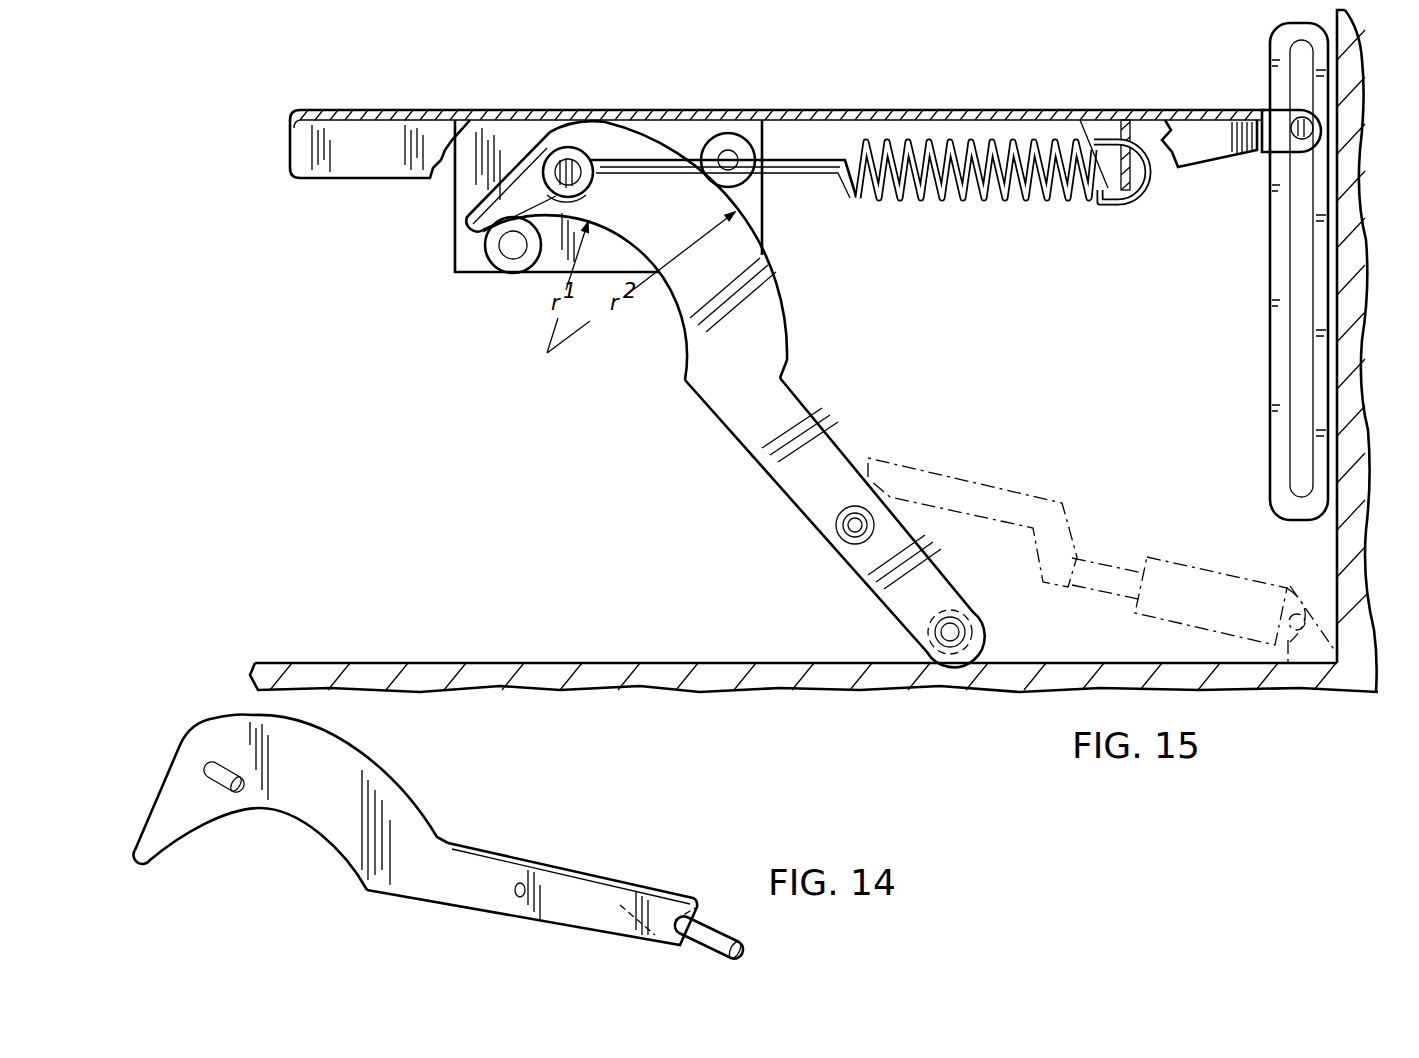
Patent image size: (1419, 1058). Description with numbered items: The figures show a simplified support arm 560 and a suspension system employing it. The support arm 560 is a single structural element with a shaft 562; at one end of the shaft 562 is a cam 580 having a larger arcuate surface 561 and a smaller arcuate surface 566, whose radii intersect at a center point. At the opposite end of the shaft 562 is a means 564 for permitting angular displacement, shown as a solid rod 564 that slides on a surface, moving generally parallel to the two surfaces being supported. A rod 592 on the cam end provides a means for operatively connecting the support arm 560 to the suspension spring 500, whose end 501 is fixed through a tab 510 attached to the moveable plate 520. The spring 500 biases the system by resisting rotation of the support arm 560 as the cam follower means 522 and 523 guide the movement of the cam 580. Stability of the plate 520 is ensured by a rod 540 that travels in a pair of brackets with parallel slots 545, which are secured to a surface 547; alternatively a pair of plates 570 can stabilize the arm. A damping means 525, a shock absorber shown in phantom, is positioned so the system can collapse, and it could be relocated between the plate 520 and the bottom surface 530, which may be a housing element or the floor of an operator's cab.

In FIG. 15, the tension spring 500 is at (987, 198).
In FIG. 15, the spring hook 501 is at (1140, 203).
In FIG. 15, the tab 510 is at (1148, 117).
In FIG. 15, the plate 520 is at (842, 112).
In FIG. 15, the cam follower means 522 is at (513, 263).
In FIG. 15, the cam follower means 523 is at (725, 145).
In FIG. 15, the damping means 525 is at (1180, 565).
In FIG. 15, the bottom surface 530 is at (645, 662).
In FIG. 15, the rod 540 is at (1313, 128).
In FIG. 15, the parallel slots 545 is at (1302, 200).
In FIG. 15, the surface 547 is at (1347, 250).
In FIG. 15, the support arm 560 is at (725, 394).
In FIG. 14, the support arm 560 is at (415, 819).
In FIG. 15, the larger arcuate surface 561 is at (785, 318).
In FIG. 14, the larger arcuate surface 561 is at (205, 722).
In FIG. 15, the shaft 562 is at (810, 443).
In FIG. 14, the shaft 562 is at (572, 878).
In FIG. 14, the means for permitting angular displacement 564 is at (725, 937).
In FIG. 15, the smaller arcuate surface 566 is at (683, 348).
In FIG. 14, the smaller arcuate surface 566 is at (343, 858).
In FIG. 15, the plates 570 is at (468, 246).
In FIG. 15, the cam 580 is at (733, 260).
In FIG. 14, the cam 580 is at (350, 768).
In FIG. 15, the rod 592 is at (571, 162).
In FIG. 14, the rod 592 is at (236, 788).